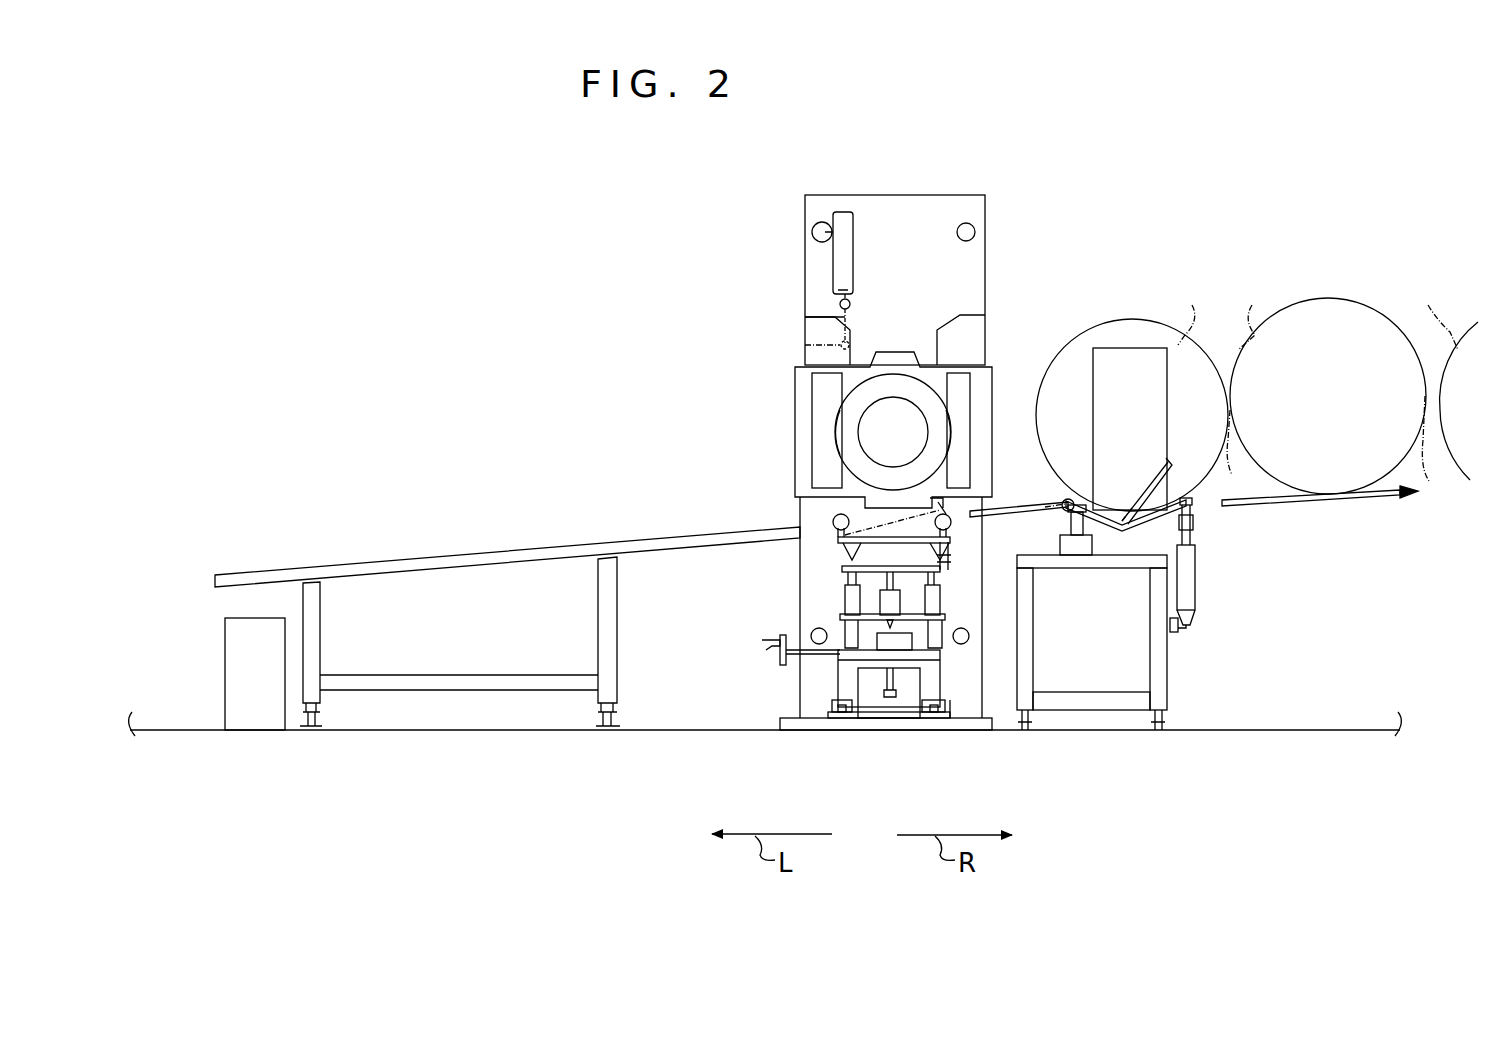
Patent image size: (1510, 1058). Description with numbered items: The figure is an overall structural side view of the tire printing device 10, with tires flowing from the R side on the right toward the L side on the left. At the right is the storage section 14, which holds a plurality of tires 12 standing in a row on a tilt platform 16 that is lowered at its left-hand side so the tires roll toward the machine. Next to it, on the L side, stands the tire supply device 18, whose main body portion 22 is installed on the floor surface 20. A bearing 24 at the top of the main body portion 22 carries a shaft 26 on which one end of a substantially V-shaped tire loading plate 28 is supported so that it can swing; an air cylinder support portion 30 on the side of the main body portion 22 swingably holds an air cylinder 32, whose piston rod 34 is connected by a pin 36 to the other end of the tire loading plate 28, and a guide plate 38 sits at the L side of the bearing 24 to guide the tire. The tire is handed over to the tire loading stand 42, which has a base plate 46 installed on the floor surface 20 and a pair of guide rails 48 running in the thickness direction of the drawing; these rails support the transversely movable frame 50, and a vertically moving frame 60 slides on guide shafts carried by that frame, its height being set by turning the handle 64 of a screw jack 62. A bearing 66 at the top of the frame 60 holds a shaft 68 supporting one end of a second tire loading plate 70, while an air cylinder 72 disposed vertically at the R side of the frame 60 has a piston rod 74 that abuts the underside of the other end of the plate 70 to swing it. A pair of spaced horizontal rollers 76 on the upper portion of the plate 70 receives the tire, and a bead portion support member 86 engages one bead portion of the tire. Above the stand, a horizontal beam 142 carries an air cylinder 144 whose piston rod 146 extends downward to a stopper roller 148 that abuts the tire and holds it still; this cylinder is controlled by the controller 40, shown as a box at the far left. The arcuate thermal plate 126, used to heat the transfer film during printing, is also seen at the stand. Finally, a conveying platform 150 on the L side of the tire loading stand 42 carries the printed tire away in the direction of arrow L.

The tire printing device 10 is at (1002, 104).
The tire 12 is at (1318, 379).
The storage section 14 is at (1292, 232).
The tilt platform 16 is at (1268, 495).
The tire supply device 18 is at (1130, 316).
The floor surface 20 is at (1332, 730).
The main body portion 22 is at (1167, 690).
The bearing 24 is at (1062, 548).
The shaft 26 is at (1098, 548).
The tire loading plate 28 is at (1126, 536).
The air cylinder support portion 30 is at (1182, 628).
The air cylinder 32 is at (1196, 585).
The piston rod 34 is at (1195, 540).
The pin 36 is at (1194, 503).
The guide plate 38 is at (1010, 511).
The controller 40 is at (225, 680).
The tire loading stand 42 is at (798, 626).
The base plate 46 is at (790, 724).
The guide rails 48 is at (842, 718).
The transversely movable frame 50 is at (838, 690).
The vertically moving frame 60 is at (952, 700).
The screw jack 62 is at (896, 720).
The handle 64 is at (770, 655).
The bearing 66 is at (856, 574).
The shaft 68 is at (845, 555).
The tire loading plate 70 is at (878, 538).
The air cylinder 72 is at (952, 608).
The piston rod 74 is at (950, 570).
The rollers 76 is at (946, 514).
The bead portion support member 86 is at (848, 444).
The arcuate thermal plate 126 is at (960, 392).
The horizontal beam 142 is at (822, 222).
The air cylinder 144 is at (858, 278).
The piston rod 146 is at (805, 316).
The stopper roller 148 is at (851, 304).
The conveying platform 150 is at (478, 548).